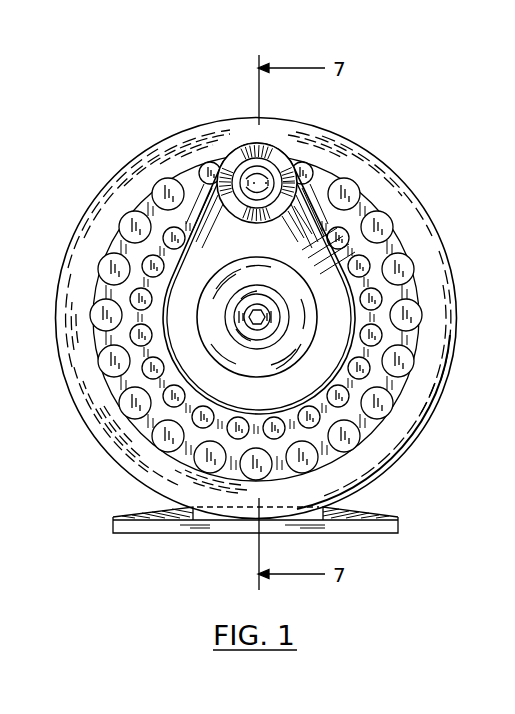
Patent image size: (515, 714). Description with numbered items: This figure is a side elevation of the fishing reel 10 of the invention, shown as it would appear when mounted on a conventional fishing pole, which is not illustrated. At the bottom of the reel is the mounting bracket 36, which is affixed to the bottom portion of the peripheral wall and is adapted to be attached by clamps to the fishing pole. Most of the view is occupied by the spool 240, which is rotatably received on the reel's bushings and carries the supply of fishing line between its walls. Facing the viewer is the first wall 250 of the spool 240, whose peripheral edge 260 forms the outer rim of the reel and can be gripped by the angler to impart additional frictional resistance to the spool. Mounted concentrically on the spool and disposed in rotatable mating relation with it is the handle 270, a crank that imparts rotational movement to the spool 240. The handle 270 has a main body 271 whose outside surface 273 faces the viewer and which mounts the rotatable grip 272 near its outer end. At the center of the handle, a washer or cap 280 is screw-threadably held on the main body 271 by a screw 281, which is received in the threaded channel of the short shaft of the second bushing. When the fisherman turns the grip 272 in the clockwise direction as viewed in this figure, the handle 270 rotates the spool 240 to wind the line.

The fishing reel 10 is at (266, 301).
The mounting bracket 36 is at (357, 527).
The spool 240 is at (178, 156).
The first wall 250 is at (93, 395).
The peripheral edge 260 is at (448, 252).
The handle 270 is at (298, 238).
The main body 271 is at (325, 283).
The rotatable grip 272 is at (275, 161).
The outside surface 273 is at (226, 262).
The cap 280 is at (285, 353).
The screw 281 is at (271, 315).